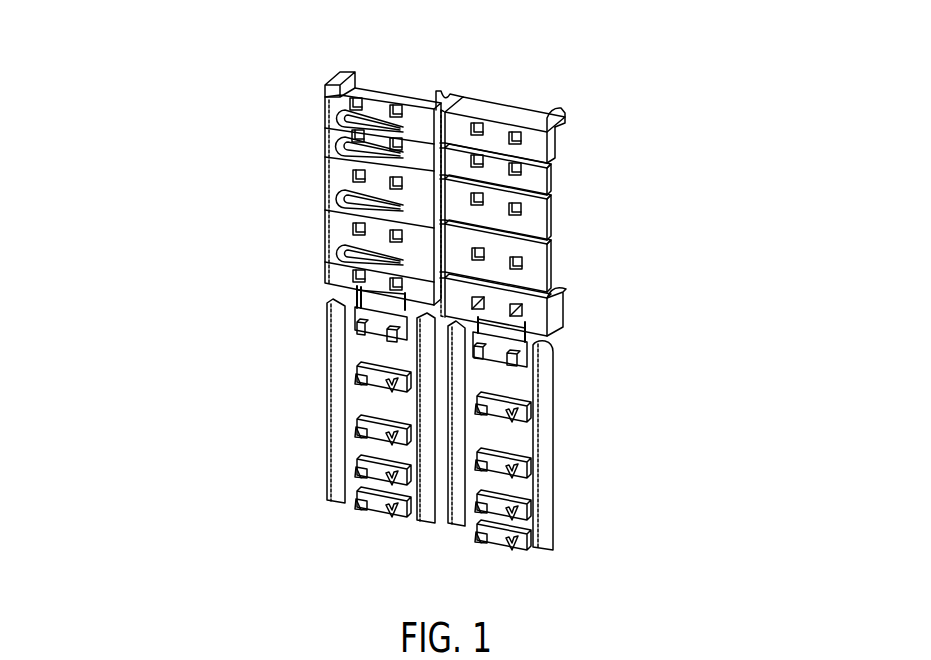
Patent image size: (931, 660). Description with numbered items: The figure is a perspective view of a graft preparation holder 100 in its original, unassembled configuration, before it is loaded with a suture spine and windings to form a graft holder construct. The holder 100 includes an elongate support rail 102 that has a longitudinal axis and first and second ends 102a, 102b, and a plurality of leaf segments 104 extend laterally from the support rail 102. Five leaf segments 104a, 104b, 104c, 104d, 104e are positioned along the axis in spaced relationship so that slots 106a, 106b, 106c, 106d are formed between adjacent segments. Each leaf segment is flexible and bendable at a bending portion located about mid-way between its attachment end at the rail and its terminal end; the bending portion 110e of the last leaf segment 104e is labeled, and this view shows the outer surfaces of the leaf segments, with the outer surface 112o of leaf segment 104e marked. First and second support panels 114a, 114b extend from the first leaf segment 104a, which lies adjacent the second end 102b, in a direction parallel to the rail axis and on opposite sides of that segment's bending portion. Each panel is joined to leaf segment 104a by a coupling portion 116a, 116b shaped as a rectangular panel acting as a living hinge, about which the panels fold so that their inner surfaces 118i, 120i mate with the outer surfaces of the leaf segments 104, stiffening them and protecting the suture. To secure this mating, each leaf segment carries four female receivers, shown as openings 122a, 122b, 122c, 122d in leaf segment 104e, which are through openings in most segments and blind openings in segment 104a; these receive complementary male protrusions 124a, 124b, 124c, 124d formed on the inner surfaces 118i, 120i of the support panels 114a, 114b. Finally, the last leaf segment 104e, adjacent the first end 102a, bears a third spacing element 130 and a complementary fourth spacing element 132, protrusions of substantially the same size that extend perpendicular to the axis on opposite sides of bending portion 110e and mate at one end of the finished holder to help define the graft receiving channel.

The graft preparation holder 100 is at (156, 95).
The support rail 102 is at (325, 216).
The first end of the support rail 102a is at (283, 80).
The second end of the support rail 102b is at (300, 300).
The leaf segments 104 is at (700, 220).
The first leaf segment 104a is at (560, 322).
The leaf segment 104b is at (548, 254).
The leaf segment 104c is at (548, 205).
The leaf segment 104d is at (550, 160).
The last leaf segment 104e is at (566, 116).
The slot 106a is at (560, 285).
The slot 106b is at (553, 230).
The slot 106c is at (553, 180).
The slot 106d is at (553, 142).
The bending portion of the last leaf segment 110e is at (452, 93).
The outer surface of the leaf segment 112o is at (338, 110).
The first support panel 114a is at (343, 452).
The second support panel 114b is at (559, 487).
The coupling portion 116a is at (342, 330).
The coupling portion 116b is at (540, 350).
The inner surface of the first support panel 118i is at (355, 407).
The inner surface of the second support panel 120i is at (554, 424).
The female receiver or opening 122a is at (360, 98).
The female receiver or opening 122b is at (400, 105).
The female receiver or opening 122c is at (478, 123).
The female receiver or opening 122d is at (514, 131).
The protrusion 124a is at (368, 515).
The protrusion 124b is at (395, 520).
The protrusion 124c is at (485, 545).
The protrusion 124d is at (515, 550).
The third spacing element 130 is at (345, 72).
The fourth spacing element 132 is at (560, 108).